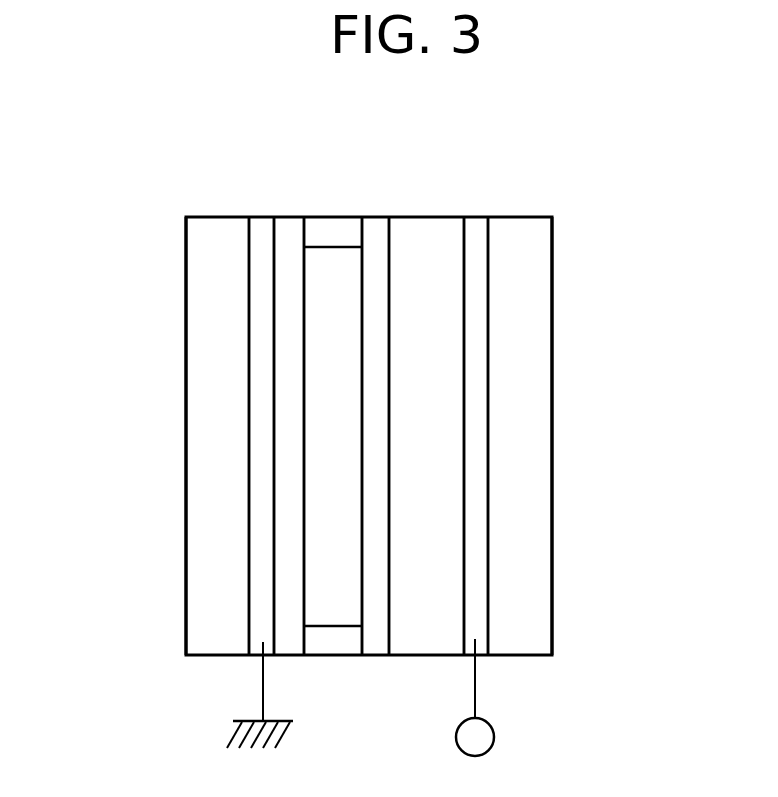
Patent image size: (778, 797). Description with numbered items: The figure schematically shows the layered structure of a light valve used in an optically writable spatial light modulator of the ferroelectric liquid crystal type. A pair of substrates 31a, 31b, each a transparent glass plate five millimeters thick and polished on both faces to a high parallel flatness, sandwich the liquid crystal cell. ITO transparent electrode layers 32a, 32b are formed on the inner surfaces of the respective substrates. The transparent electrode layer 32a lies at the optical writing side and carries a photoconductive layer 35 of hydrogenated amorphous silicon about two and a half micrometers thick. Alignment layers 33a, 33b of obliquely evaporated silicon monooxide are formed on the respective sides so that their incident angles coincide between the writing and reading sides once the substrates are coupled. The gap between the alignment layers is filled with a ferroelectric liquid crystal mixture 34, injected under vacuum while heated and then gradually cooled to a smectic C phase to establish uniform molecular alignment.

The substrate 31a is at (533, 268).
The substrate 31b is at (195, 246).
The transparent electrode layer 32a is at (482, 245).
The transparent electrode layer 32b is at (257, 239).
The alignment layer 33a is at (382, 230).
The alignment layer 33b is at (288, 228).
The ferroelectric liquid crystal mixture 34 is at (333, 257).
The photoconductive layer 35 is at (433, 230).